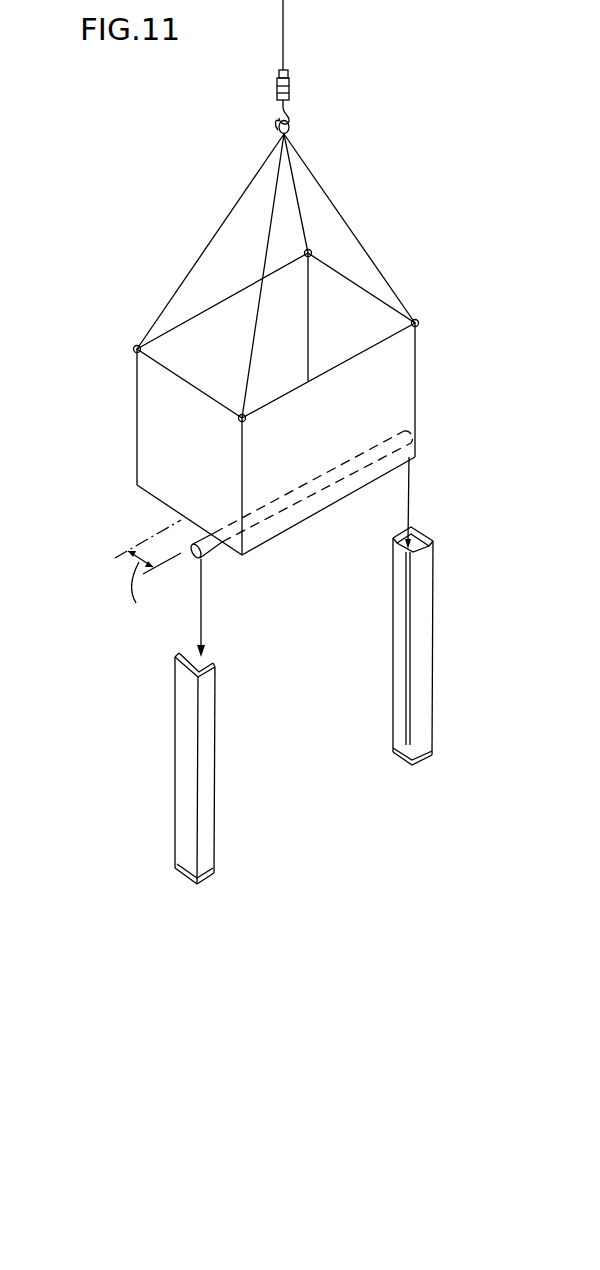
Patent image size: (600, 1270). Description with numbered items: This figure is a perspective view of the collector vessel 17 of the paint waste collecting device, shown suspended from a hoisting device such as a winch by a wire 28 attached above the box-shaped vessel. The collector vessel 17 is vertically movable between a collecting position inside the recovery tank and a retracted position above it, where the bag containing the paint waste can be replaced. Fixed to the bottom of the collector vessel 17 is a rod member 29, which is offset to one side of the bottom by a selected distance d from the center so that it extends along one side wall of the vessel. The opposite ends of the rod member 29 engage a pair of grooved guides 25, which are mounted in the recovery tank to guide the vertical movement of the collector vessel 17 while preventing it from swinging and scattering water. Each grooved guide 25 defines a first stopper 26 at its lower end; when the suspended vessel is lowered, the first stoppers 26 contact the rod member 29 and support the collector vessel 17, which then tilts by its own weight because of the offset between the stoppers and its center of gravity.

The wire 28 is at (285, 38).
The collector vessel 17 is at (412, 377).
The rod member 29 is at (212, 551).
The grooved guide 25 is at (185, 783).
The first stopper 26 is at (210, 880).